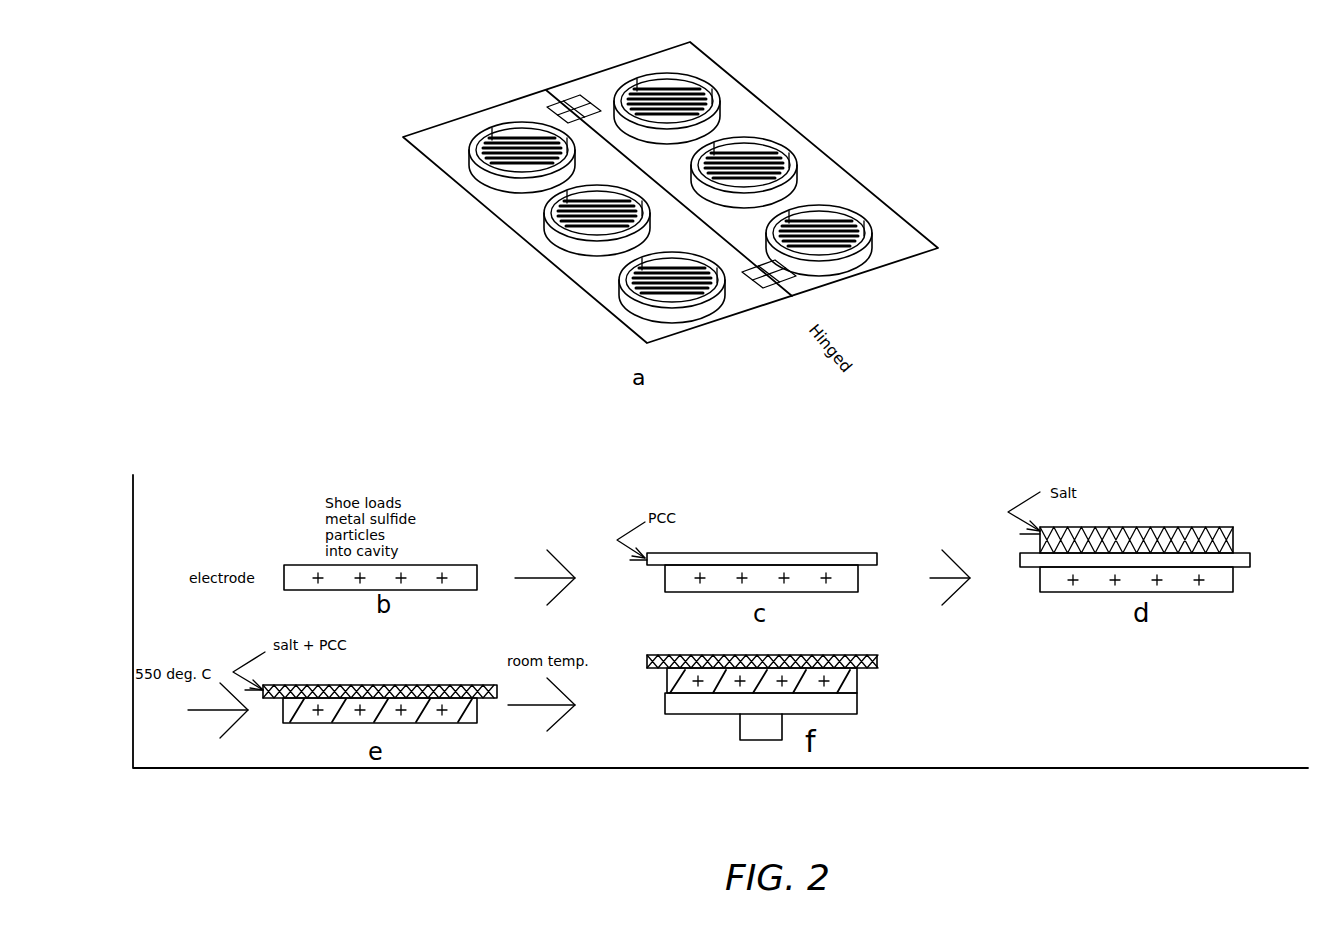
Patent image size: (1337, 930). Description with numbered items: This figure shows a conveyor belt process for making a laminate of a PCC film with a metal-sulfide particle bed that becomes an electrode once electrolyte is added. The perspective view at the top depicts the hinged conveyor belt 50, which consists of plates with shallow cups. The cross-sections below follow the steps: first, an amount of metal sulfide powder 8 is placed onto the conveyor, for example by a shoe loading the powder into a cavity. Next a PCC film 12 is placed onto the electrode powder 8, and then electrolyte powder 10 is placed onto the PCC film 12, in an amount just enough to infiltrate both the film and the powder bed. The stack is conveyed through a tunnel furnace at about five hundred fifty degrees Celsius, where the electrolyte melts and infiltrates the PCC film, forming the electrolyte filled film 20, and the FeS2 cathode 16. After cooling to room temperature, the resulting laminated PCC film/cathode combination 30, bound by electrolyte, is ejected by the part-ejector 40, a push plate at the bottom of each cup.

The conveyor belt 50 is at (671, 217).
The metal sulfide powder 8 is at (477, 588).
The PCC film 12 is at (877, 559).
The electrolyte powder 10 is at (1233, 541).
The electrolyte filled film 20 is at (497, 690).
The FeS2 cathode 16 is at (477, 718).
The laminated PCC film/cathode combination 30 is at (883, 656).
The part-ejector 40 is at (857, 704).